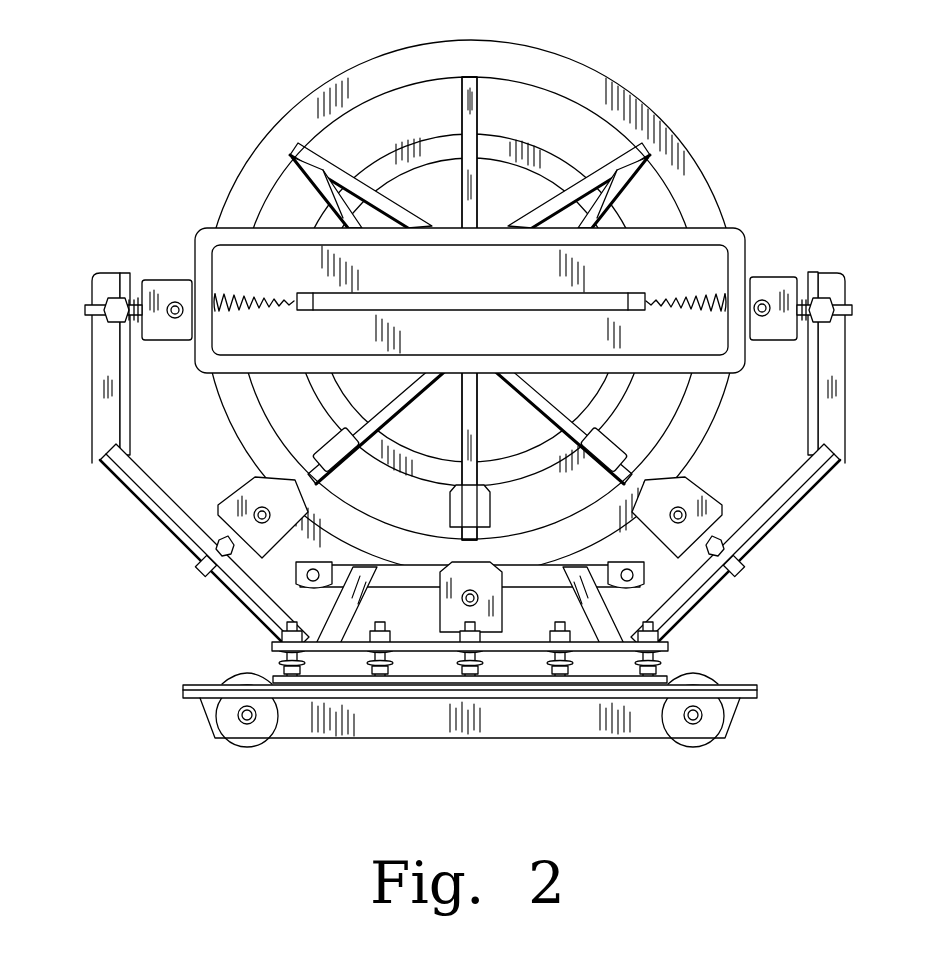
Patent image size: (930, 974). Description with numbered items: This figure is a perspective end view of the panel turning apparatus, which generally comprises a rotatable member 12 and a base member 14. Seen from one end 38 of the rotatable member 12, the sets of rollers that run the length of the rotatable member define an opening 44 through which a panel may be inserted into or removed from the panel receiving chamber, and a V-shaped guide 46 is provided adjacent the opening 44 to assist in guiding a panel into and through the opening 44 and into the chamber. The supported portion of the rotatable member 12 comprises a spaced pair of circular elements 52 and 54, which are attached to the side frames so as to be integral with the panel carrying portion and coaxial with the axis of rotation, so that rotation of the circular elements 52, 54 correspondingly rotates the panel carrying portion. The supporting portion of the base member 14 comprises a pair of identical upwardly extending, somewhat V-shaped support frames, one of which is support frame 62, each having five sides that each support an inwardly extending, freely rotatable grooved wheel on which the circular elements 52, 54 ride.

The rotatable member 12 is at (212, 188).
The base member 14 is at (140, 540).
The end of the rotatable member 38 is at (163, 358).
The opening 44 is at (611, 291).
The V-shaped guide 46 is at (247, 350).
The circular element 52 is at (585, 80).
The circular element 54 is at (510, 152).
The support frame 62 is at (770, 527).